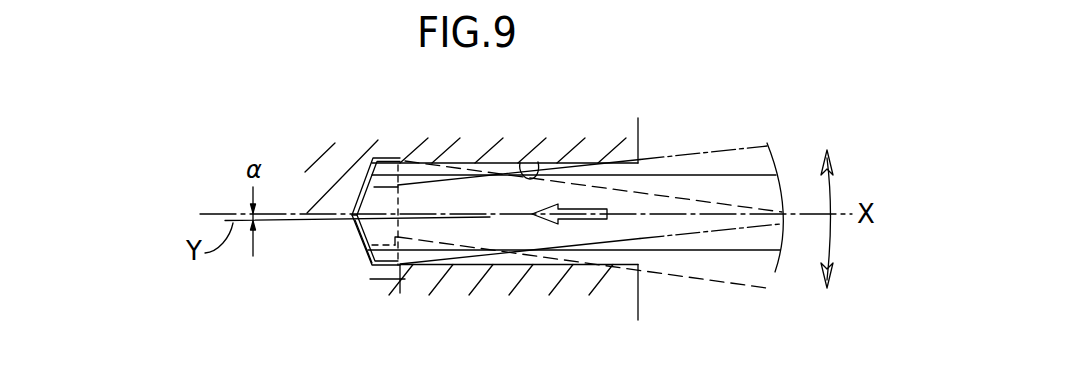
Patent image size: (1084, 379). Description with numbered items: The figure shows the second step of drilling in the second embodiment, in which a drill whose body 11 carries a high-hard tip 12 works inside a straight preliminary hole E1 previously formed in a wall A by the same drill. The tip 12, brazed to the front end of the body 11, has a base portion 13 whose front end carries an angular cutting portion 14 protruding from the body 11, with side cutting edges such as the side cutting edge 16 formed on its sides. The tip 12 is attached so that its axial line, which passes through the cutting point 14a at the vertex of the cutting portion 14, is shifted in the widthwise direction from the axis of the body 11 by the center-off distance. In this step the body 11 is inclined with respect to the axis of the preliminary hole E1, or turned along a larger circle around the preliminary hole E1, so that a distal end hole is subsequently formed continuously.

The main body 11 is at (684, 252).
The high-hard tip 12 is at (358, 190).
The base portion 13 is at (409, 277).
The cutting portion 14 is at (364, 259).
The cutting point 14a is at (348, 222).
The side cutting edge 16 is at (372, 266).
The preliminary hole E1 is at (520, 163).
The wall A is at (640, 133).